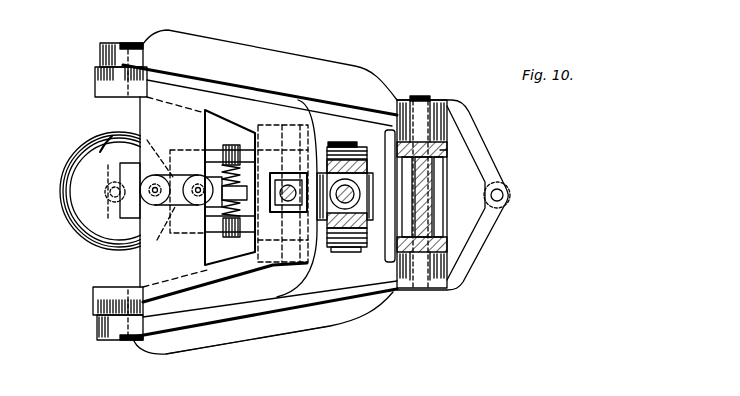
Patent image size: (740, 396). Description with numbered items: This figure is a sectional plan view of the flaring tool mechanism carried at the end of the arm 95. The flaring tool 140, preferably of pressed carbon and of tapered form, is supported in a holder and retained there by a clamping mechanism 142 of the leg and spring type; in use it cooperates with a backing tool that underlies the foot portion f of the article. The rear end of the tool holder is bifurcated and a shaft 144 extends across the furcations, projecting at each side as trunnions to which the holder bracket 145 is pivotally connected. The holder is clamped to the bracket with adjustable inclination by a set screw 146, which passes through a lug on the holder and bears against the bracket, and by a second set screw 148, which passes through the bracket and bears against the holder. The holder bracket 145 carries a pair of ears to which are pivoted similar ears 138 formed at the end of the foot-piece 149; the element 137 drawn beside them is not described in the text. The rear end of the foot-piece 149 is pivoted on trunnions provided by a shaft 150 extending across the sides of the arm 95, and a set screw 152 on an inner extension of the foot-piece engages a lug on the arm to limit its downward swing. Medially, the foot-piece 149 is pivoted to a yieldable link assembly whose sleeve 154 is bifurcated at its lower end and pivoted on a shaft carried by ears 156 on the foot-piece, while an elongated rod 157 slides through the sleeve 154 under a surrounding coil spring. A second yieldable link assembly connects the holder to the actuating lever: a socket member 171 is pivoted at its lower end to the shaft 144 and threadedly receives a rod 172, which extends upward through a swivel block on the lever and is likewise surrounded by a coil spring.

The ears 138 is at (100, 52).
The lower end block 137 is at (97, 288).
The wheel A is at (63, 183).
The foot portion f is at (100, 152).
The flaring tool 140 is at (130, 176).
The second set screw 148 is at (154, 187).
The set screw 146 is at (197, 207).
The holder bracket 145 is at (230, 268).
The clamping mechanism 142 is at (245, 236).
The shaft 144 is at (292, 128).
The socket member 171 is at (284, 188).
The rod 172 is at (295, 199).
The ears 156 is at (340, 143).
The elongated rod 157 is at (372, 228).
The sleeve 154 is at (330, 248).
The shaft 150 is at (432, 86).
The arm 95 is at (440, 143).
The set screw 152 is at (498, 195).
The foot-piece 149 is at (333, 320).